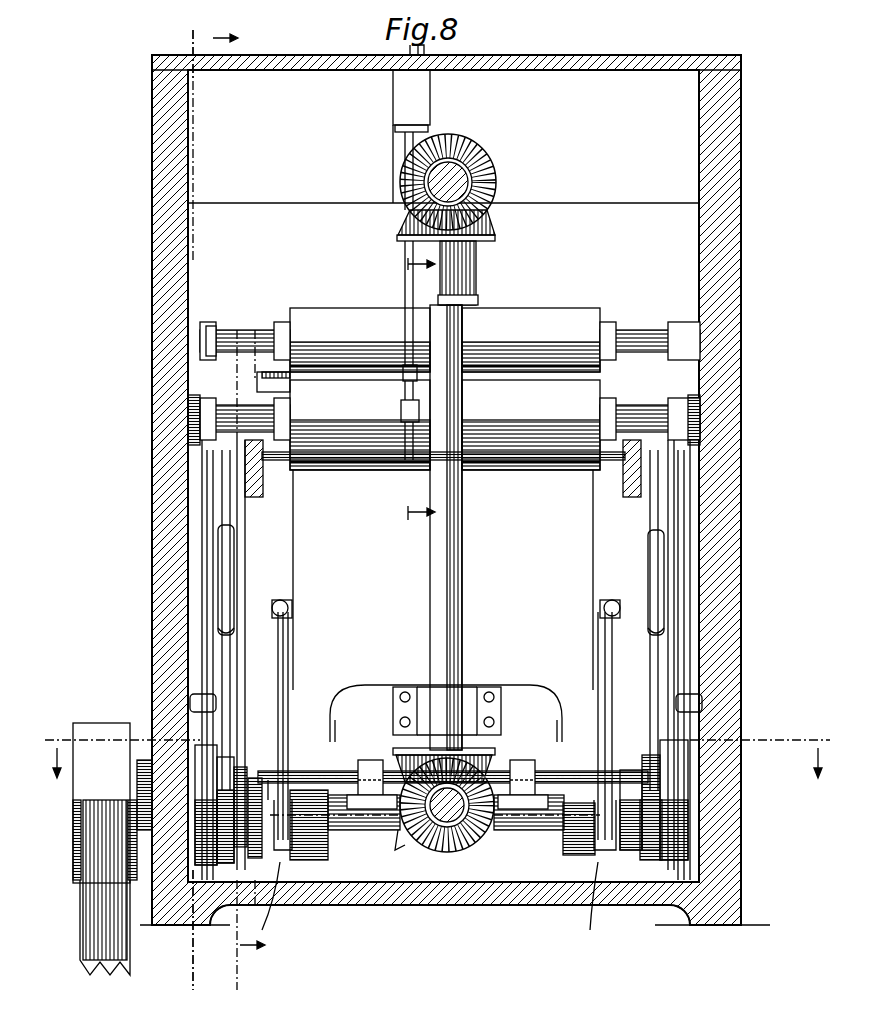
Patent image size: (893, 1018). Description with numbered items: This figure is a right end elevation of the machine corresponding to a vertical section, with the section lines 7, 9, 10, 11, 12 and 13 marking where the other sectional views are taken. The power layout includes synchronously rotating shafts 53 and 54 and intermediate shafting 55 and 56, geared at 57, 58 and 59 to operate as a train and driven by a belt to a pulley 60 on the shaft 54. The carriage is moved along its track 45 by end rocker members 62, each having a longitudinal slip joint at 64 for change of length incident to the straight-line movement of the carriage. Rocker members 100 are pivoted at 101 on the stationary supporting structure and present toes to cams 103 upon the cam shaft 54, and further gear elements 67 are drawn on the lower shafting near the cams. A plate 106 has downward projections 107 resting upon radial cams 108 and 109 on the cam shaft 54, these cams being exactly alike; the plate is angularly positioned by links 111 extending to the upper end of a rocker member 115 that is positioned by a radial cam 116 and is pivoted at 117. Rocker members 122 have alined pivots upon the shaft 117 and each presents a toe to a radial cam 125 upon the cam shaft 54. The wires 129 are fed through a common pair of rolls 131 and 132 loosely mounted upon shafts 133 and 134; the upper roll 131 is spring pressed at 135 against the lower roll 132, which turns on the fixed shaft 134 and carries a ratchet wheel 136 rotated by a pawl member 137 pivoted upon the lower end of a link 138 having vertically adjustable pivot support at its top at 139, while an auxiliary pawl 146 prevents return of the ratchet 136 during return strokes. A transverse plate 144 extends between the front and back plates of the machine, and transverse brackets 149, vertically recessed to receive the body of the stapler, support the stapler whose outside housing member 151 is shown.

The section line 7- 7 is at (224, 507).
The section line 9- 9 is at (437, 753).
The direction arrow 10 is at (410, 380).
The section line 11- 11 is at (197, 510).
The section line 12- 12 is at (261, 618).
The section line 13- 13 is at (236, 652).
The track 45 is at (632, 498).
The cam shaft 53 is at (482, 162).
The cam shaft 54 is at (618, 815).
The intermediate shafting 55 is at (465, 606).
The intermediate shafting 56 is at (455, 848).
The gearing 57 is at (490, 230).
The gearing 58 is at (472, 770).
The gearing 59 is at (400, 850).
The pulley 60 is at (78, 880).
The end rocker member 62 is at (662, 665).
The longitudinal slip joint 64 is at (665, 563).
The gear 67 is at (650, 835).
The rocker member 100 is at (688, 672).
The pivot 101 is at (705, 712).
The cam 103 is at (718, 758).
The plate 106 is at (443, 602).
The downward projection 107 is at (556, 732).
The radial cam 108 is at (318, 858).
The radial cam 109 is at (580, 848).
The link 111 is at (606, 600).
The rocker member 115 is at (605, 672).
The radial cam 116 is at (429, 862).
The pivot shaft 117 is at (548, 760).
The rocker member 122 is at (634, 610).
The radial cam 125 is at (632, 770).
The wire 129 is at (580, 378).
The upper roll 131 is at (350, 306).
The lower roll 132 is at (548, 420).
The shaft 133 is at (242, 340).
The fixed shaft 134 is at (700, 420).
The spring 135 is at (668, 408).
The ratchet wheel 136 is at (415, 415).
The pawl member 137 is at (410, 390).
The link 138 is at (418, 252).
The vertically adjustable pivot support 139 is at (398, 128).
The transverse plate 144 is at (336, 55).
The auxiliary pawl 146 is at (430, 418).
The transverse bracket 149 is at (668, 278).
The outside housing member 151 is at (283, 390).